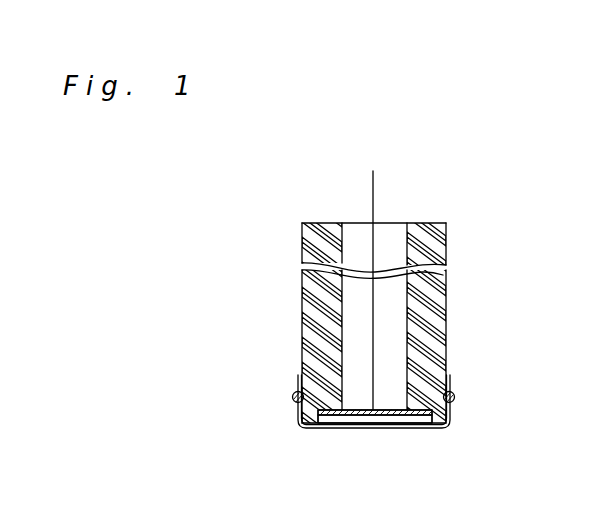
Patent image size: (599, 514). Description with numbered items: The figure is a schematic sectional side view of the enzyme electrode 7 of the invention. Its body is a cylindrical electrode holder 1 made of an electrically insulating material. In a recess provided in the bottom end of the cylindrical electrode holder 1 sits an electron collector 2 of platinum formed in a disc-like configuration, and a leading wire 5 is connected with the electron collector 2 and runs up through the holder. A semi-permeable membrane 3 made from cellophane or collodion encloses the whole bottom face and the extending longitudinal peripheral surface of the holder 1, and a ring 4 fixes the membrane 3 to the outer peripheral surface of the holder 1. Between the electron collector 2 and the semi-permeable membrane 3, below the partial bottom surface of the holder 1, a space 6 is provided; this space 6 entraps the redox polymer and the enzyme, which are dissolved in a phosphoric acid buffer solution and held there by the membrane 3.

The cylindrical electrode holder 1 is at (423, 287).
The electron collector 2 is at (378, 410).
The semi-permeable membrane 3 is at (352, 430).
The ring 4 is at (455, 397).
The leading wire 5 is at (373, 194).
The space 6 is at (378, 417).
The enzyme electrode 7 is at (296, 342).